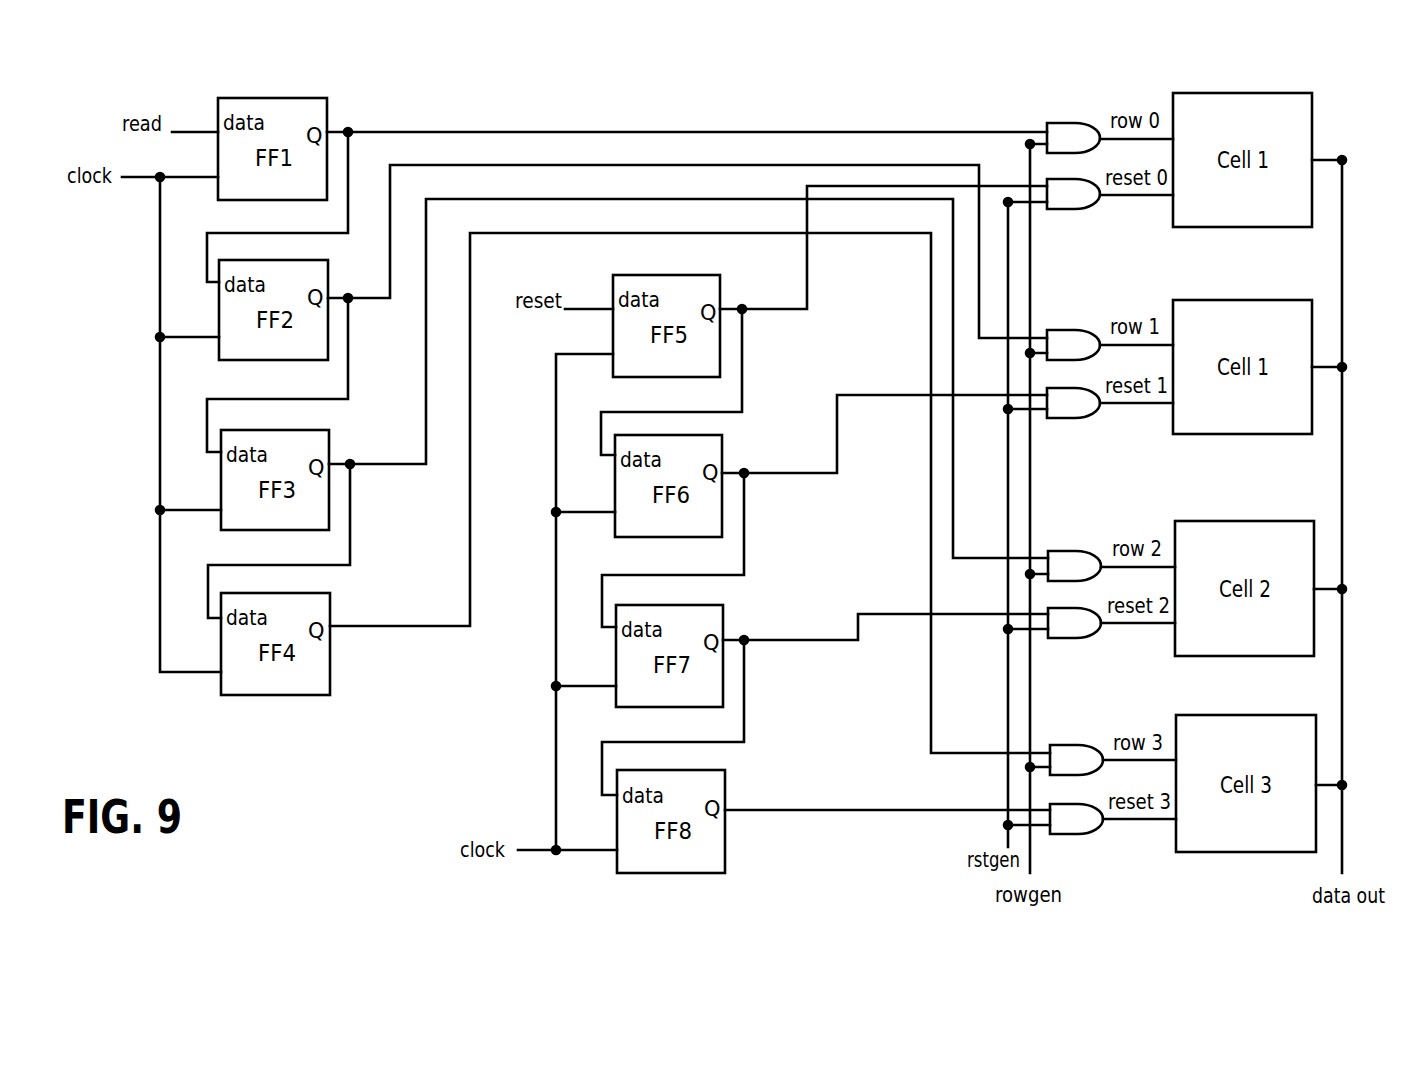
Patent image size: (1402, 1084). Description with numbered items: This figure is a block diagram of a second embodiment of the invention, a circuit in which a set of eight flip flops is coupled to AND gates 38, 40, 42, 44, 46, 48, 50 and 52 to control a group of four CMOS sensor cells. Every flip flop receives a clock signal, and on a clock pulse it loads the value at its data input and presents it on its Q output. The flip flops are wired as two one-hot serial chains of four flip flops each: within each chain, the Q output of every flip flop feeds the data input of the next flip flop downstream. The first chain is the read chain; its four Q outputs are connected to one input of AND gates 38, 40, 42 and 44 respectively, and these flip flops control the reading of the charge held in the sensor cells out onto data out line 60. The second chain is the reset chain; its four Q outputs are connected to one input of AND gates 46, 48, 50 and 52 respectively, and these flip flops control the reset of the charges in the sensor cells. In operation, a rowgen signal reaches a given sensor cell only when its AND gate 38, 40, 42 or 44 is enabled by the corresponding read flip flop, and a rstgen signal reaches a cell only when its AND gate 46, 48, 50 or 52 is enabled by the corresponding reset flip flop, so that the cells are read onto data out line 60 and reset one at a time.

The AND gate 38 is at (1068, 122).
The AND gate 40 is at (1068, 330).
The AND gate 42 is at (1069, 550).
The AND gate 44 is at (1071, 745).
The AND gate 46 is at (1062, 209).
The AND gate 48 is at (1062, 418).
The AND gate 50 is at (1064, 638).
The AND gate 52 is at (1066, 834).
The data out line 60 is at (1343, 490).